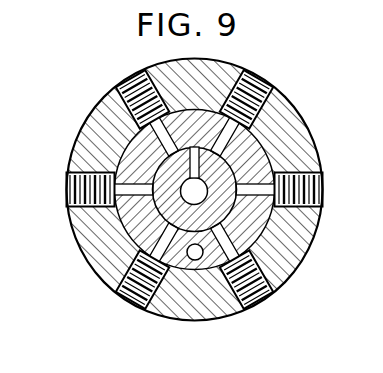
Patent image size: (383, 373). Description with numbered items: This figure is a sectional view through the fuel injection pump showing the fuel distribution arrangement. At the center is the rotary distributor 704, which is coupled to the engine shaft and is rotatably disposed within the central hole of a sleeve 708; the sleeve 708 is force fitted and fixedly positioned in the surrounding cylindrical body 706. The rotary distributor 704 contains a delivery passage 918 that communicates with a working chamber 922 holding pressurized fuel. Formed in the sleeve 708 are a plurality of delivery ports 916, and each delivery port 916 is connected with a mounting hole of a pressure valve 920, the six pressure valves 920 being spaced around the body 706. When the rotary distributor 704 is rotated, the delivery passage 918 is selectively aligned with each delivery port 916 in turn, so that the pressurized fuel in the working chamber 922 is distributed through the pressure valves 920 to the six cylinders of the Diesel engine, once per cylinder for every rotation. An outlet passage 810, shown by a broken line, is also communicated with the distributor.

The rotary distributor 704 is at (120, 228).
The cylindrical body 706 is at (276, 116).
The sleeve 708 is at (270, 148).
The outlet passage 810 is at (193, 260).
The delivery ports 916 is at (150, 136).
The delivery passage 918 is at (192, 160).
The pressure valve 920 is at (133, 82).
The working chamber 922 is at (272, 241).